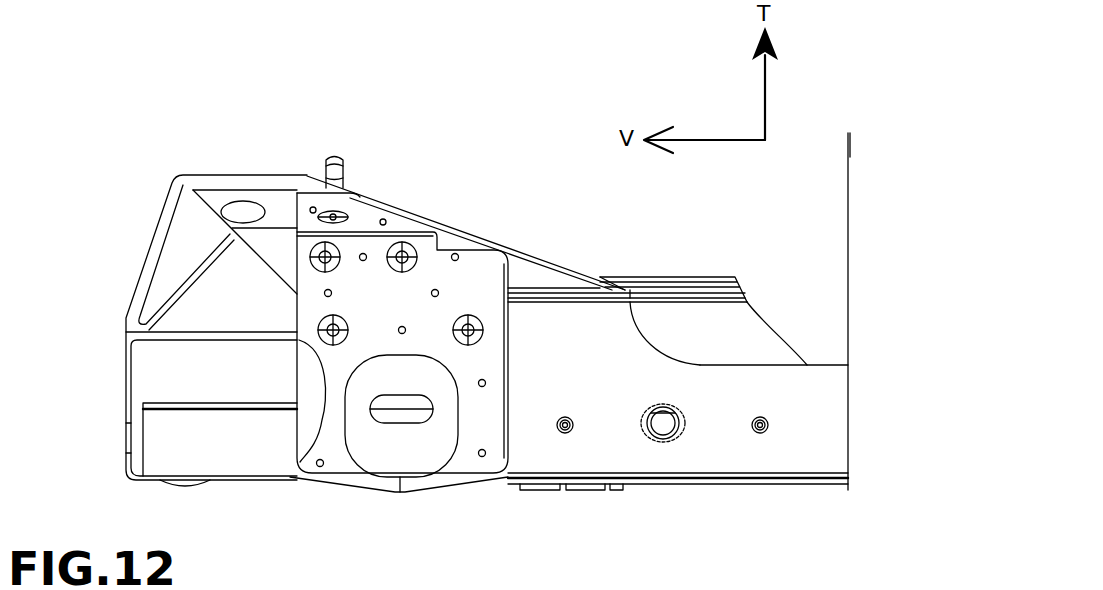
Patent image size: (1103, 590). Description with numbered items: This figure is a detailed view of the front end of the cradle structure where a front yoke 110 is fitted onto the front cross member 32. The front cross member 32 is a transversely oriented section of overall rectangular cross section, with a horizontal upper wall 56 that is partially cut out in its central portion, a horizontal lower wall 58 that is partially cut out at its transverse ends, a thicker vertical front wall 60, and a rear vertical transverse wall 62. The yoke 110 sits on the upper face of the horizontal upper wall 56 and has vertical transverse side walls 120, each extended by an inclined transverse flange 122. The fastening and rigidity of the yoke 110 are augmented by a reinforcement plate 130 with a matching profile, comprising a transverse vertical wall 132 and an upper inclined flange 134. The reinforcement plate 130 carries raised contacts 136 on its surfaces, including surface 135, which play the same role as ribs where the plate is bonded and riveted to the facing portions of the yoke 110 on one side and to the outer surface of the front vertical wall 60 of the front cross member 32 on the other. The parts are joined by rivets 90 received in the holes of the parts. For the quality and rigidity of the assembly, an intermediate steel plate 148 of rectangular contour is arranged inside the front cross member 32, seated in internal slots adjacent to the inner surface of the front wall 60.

The front yoke 110 is at (216, 180).
The inclined transverse flange 122 is at (284, 204).
The rivet 90 is at (346, 189).
The upper inclined flange 134 is at (394, 212).
The transverse vertical wall 132 is at (473, 290).
The vertical transverse side wall 120 is at (527, 275).
The horizontal upper wall 56 is at (564, 290).
The front cross member 32 is at (754, 297).
The rear vertical transverse wall 62 is at (710, 337).
The vertical front wall 60 is at (790, 424).
The reinforcement plate 130 is at (354, 463).
The intermediate steel plate 148 is at (686, 423).
The horizontal lower wall 58 is at (655, 483).
The surface 135 is at (531, 536).
The raised contacts 136 is at (529, 537).